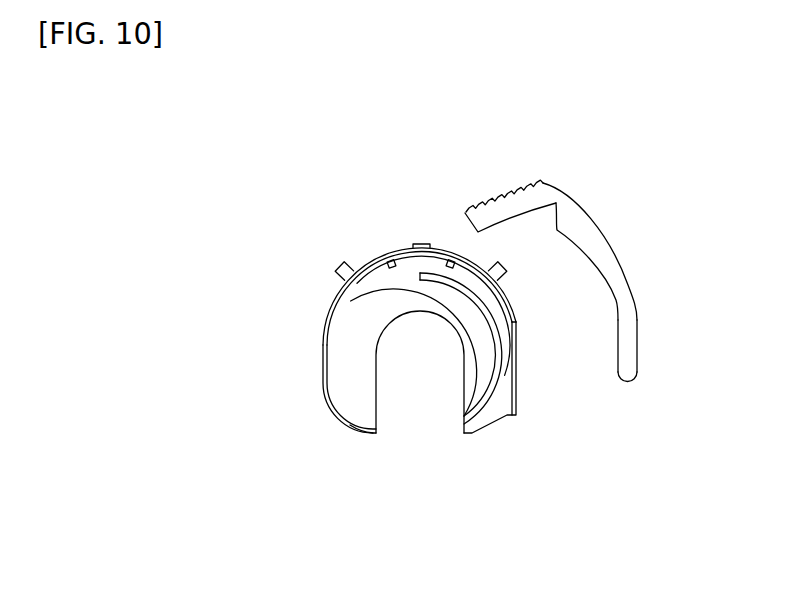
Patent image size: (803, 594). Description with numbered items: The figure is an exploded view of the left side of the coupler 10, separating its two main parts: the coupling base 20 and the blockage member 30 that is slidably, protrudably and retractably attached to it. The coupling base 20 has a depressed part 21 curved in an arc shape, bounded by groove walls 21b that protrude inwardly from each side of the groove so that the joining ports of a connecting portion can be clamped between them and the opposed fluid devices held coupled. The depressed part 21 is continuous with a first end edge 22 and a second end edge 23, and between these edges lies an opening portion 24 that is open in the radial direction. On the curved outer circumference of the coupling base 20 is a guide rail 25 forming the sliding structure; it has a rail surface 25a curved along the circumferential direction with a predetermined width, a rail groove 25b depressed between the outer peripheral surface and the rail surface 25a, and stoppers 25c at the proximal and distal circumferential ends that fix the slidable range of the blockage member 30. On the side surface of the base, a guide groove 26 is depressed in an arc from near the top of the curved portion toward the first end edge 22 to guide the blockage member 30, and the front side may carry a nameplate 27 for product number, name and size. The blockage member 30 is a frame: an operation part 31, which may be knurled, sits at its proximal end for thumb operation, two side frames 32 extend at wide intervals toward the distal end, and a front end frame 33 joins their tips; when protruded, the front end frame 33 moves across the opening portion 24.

The coupler 10 is at (352, 158).
The coupling base 20 is at (322, 357).
The depressed part 21 is at (343, 298).
The groove wall 21b is at (363, 433).
The first end edge 22 is at (465, 435).
The second end edge 23 is at (375, 438).
The opening portion 24 is at (422, 431).
The guide rail 25 is at (358, 259).
The rail surface 25a is at (423, 246).
The rail groove 25b is at (375, 252).
The stopper 25c is at (337, 270).
The guide groove 26 is at (485, 400).
The nameplate 27 is at (517, 397).
The blockage member 30 is at (550, 197).
The operation part 31 is at (513, 203).
The side frame 32 is at (627, 317).
The front end frame 33 is at (637, 380).